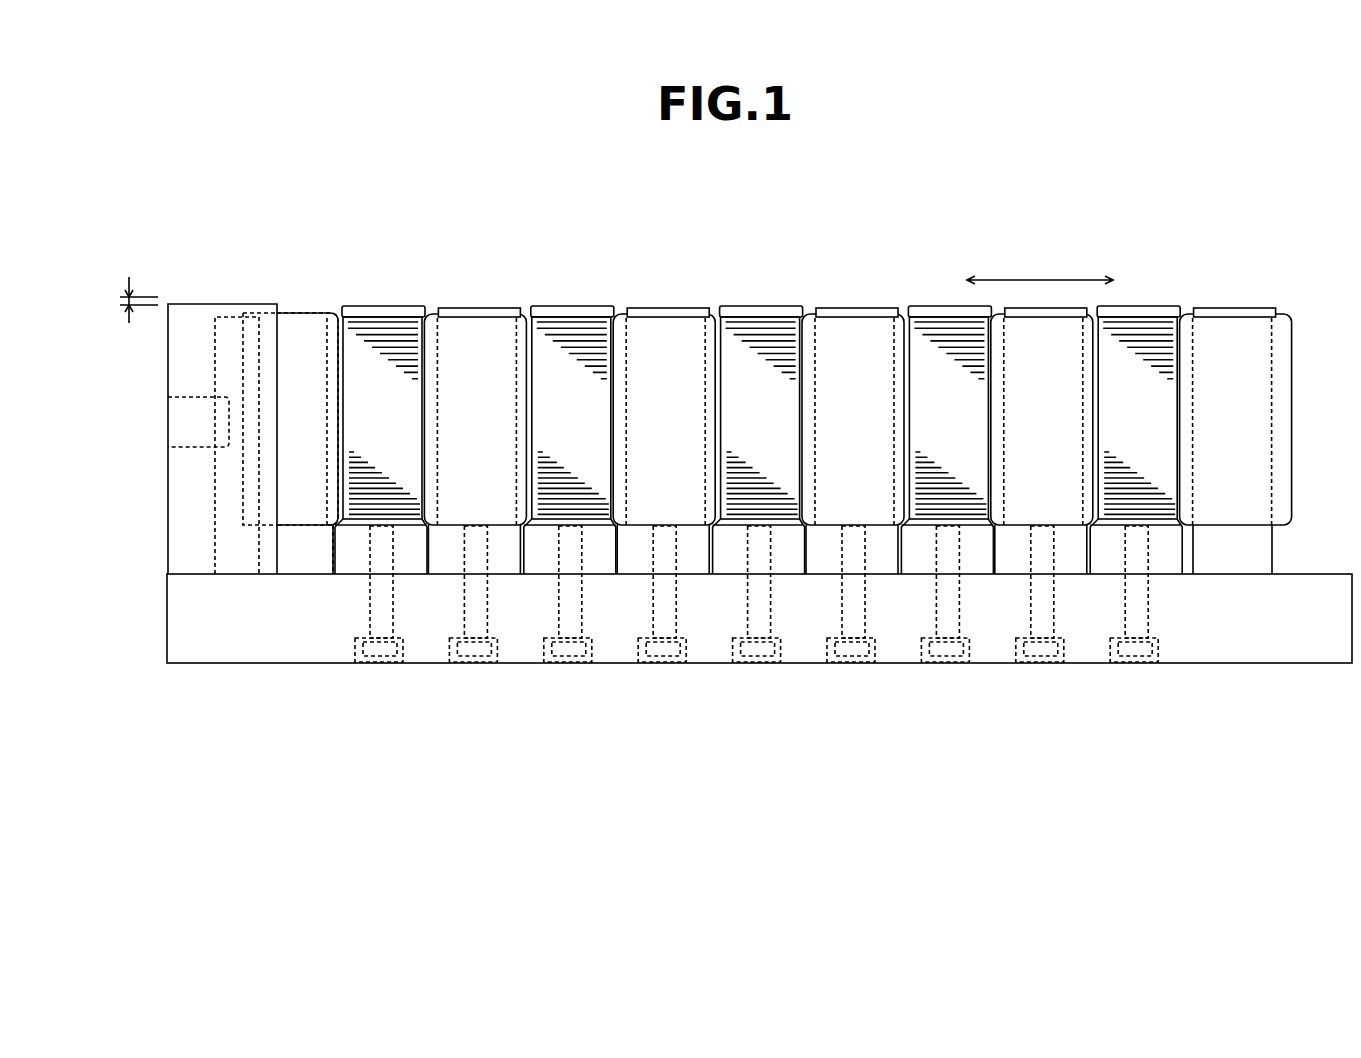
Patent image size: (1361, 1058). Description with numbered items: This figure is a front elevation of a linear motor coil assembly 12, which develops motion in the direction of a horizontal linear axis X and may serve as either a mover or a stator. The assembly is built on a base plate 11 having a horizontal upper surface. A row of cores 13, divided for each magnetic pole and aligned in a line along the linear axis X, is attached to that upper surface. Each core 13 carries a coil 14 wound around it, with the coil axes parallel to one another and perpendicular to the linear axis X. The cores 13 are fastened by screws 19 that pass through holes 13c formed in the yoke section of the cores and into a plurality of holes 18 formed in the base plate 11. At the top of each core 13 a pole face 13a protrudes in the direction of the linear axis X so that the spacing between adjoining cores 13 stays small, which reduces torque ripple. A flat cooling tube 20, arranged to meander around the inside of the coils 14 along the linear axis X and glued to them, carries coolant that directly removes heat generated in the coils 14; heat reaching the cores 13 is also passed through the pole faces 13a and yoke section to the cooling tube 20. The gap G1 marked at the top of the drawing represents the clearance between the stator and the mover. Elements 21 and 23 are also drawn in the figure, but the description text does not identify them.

The base plate 11 is at (522, 648).
The linear motor coil assembly 12 is at (773, 493).
The core 13 is at (343, 499).
The pole face 13a is at (368, 306).
The hole 13c is at (370, 552).
The coil 14 is at (340, 473).
The hole 18 is at (403, 647).
The screw 19 is at (382, 653).
The cooling tube 20 is at (305, 459).
The end plate 21 is at (193, 390).
The spacer block 23 is at (1263, 545).
The linear axis X is at (1040, 268).
The gap G1 is at (118, 300).